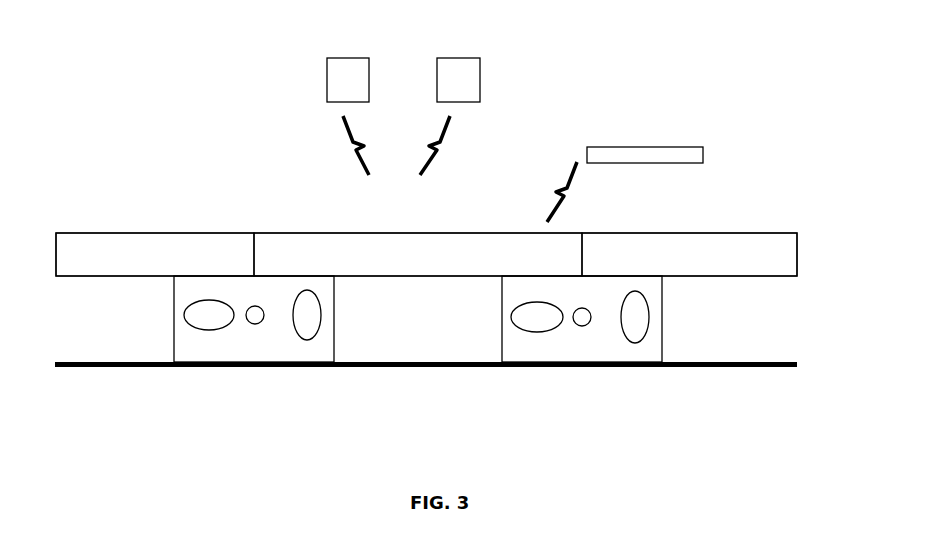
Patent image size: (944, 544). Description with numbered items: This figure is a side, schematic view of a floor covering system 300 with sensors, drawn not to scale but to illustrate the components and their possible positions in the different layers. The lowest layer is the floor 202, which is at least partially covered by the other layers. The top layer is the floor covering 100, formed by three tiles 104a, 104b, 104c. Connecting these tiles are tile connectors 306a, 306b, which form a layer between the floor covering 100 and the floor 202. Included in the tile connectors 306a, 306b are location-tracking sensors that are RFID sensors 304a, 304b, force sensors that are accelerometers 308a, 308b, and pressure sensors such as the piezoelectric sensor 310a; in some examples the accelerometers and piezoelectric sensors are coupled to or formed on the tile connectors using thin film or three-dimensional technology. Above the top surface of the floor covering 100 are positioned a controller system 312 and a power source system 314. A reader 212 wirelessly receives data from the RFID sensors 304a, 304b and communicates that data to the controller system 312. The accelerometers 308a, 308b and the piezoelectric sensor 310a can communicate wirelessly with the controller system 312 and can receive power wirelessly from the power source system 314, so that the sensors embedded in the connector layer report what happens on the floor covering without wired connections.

The floor covering 100 is at (454, 231).
The tile 104a is at (143, 232).
The tile 104b is at (461, 232).
The tile 104c is at (722, 232).
The floor 202 is at (785, 369).
The reader 212 is at (700, 147).
The floor covering system 300 is at (193, 444).
The RFID sensor 304a is at (255, 324).
The RFID sensor 304b is at (582, 326).
The tile connector 306a is at (246, 345).
The tile connector 306b is at (591, 344).
The accelerometer 308a is at (321, 316).
The accelerometer 308b is at (511, 318).
The piezoelectric sensor 310a is at (185, 318).
The controller system 312 is at (480, 58).
The power source system 314 is at (327, 58).